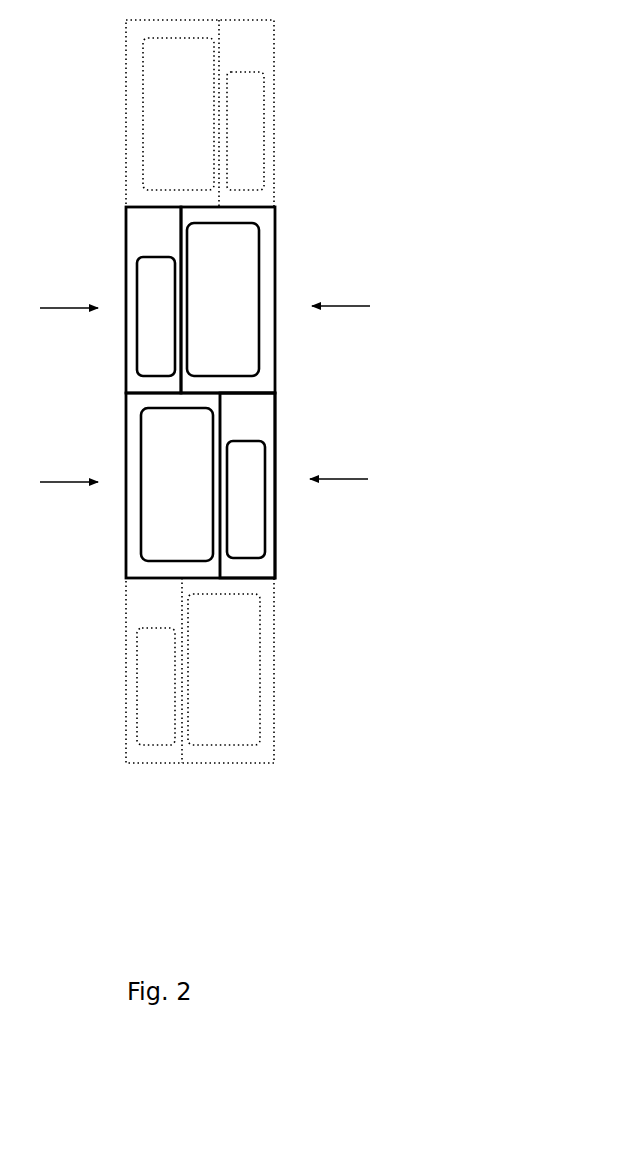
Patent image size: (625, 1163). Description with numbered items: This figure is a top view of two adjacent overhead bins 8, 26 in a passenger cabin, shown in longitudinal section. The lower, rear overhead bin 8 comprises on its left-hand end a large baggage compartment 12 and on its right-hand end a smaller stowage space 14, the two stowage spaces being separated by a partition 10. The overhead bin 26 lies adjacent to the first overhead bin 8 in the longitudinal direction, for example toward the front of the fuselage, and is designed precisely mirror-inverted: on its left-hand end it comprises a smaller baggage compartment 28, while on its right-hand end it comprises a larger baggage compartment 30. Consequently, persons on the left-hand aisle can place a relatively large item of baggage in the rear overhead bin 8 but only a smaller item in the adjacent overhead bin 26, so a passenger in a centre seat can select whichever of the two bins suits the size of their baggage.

The overhead bin 8 is at (232, 582).
The partition 10 is at (222, 425).
The large baggage compartment 12 is at (185, 570).
The smaller stowage space 14 is at (270, 494).
The overhead bin 26 is at (272, 194).
The smaller baggage compartment 28 is at (162, 226).
The larger baggage compartment 30 is at (268, 229).